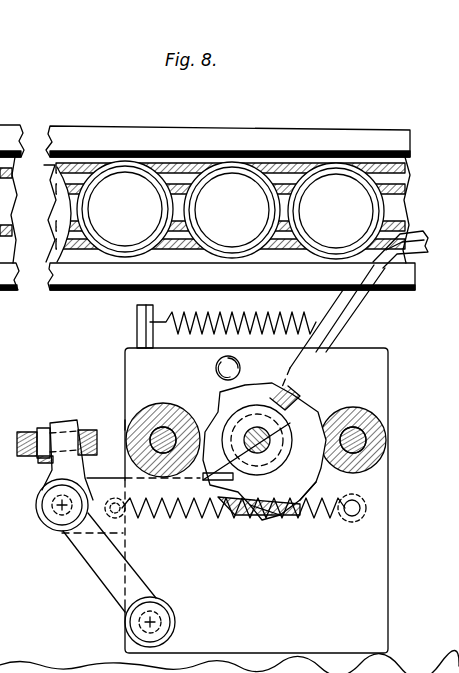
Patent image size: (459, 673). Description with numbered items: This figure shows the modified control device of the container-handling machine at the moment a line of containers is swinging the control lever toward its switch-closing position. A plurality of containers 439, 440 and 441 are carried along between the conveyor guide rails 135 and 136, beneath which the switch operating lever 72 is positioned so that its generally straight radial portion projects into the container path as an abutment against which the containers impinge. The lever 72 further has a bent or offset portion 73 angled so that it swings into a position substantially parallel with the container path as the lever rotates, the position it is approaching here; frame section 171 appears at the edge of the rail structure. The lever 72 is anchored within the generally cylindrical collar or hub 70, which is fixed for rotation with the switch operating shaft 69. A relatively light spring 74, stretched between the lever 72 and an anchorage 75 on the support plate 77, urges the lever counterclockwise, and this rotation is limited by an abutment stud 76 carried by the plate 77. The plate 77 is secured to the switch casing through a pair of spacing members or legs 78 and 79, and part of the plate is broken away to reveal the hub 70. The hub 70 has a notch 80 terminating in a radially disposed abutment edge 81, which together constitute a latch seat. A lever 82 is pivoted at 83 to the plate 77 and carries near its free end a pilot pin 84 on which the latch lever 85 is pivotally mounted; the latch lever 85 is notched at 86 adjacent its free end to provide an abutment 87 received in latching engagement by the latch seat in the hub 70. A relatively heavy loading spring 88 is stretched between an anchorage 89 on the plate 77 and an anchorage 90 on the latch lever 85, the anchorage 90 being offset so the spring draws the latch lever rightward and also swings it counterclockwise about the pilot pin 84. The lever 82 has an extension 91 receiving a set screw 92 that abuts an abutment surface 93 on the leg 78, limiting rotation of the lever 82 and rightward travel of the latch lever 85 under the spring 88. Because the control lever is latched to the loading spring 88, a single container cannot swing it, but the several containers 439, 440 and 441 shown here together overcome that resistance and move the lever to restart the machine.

The conveyor guide rail 135 is at (80, 135).
The conveyor guide rail 136 is at (66, 290).
The container 441 is at (133, 172).
The container 440 is at (235, 176).
The container 439 is at (344, 176).
The bent or offset portion 73 is at (418, 230).
The frame section 171 is at (30, 209).
The switch operating lever 72 is at (360, 306).
The support plate 77 is at (380, 582).
The anchorage 75 is at (137, 326).
The spring 74 is at (208, 322).
The abutment stud 76 is at (241, 368).
The spacing member or leg 78 is at (163, 402).
The spacing member or leg 79 is at (355, 407).
The collar or hub 70 is at (260, 445).
The switch operating shaft 69 is at (286, 434).
The abutment edge 81 is at (250, 440).
The notch 86 is at (304, 479).
The latch lever 85 is at (110, 478).
The notch 80 is at (233, 497).
The loading spring 88 is at (258, 522).
The abutment 87 is at (254, 498).
The anchorage 90 is at (130, 522).
The anchorage 89 is at (352, 522).
The set screw 92 is at (45, 428).
The extension 91 is at (70, 420).
The abutment surface 93 is at (124, 420).
The pilot pin 84 is at (55, 528).
The pivot 83 is at (176, 618).
The lever 82 is at (100, 571).